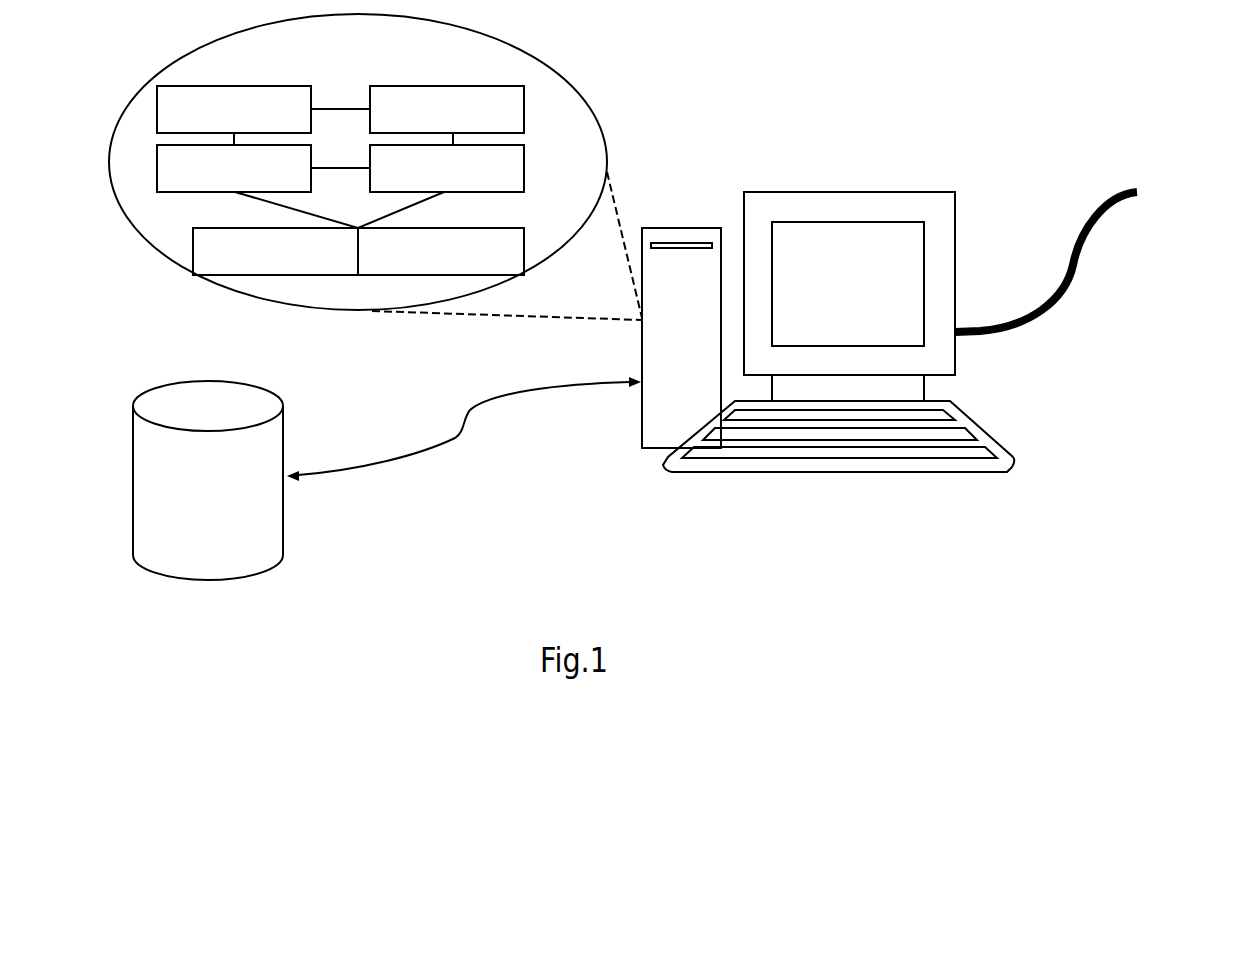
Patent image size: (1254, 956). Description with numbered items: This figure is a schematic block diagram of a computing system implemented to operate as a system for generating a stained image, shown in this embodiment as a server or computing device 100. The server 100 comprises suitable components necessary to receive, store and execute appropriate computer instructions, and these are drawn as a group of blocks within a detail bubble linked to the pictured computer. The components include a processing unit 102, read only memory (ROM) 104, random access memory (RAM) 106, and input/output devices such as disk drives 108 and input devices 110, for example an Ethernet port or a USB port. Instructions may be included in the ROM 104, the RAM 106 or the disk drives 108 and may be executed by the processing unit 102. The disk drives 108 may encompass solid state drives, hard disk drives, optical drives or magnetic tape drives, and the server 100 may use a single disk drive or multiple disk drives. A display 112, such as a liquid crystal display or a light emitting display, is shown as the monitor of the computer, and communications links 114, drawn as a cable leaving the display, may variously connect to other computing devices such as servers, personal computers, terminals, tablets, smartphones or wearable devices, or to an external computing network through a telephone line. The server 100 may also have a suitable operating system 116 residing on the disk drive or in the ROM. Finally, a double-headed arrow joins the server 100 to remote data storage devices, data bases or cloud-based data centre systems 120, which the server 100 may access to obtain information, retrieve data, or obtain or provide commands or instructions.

The server or computing device 100 is at (934, 330).
The processing unit 102 is at (234, 109).
The read only memory (ROM) 104 is at (234, 168).
The random access memory (RAM) 106 is at (447, 109).
The disk drives 108 is at (447, 168).
The input devices 110 is at (275, 251).
The display 112 is at (832, 189).
The communications links 114 is at (1091, 252).
The operating system 116 is at (441, 251).
The remote data storage devices, data bases or cloud-based data centre systems 120 is at (208, 480).